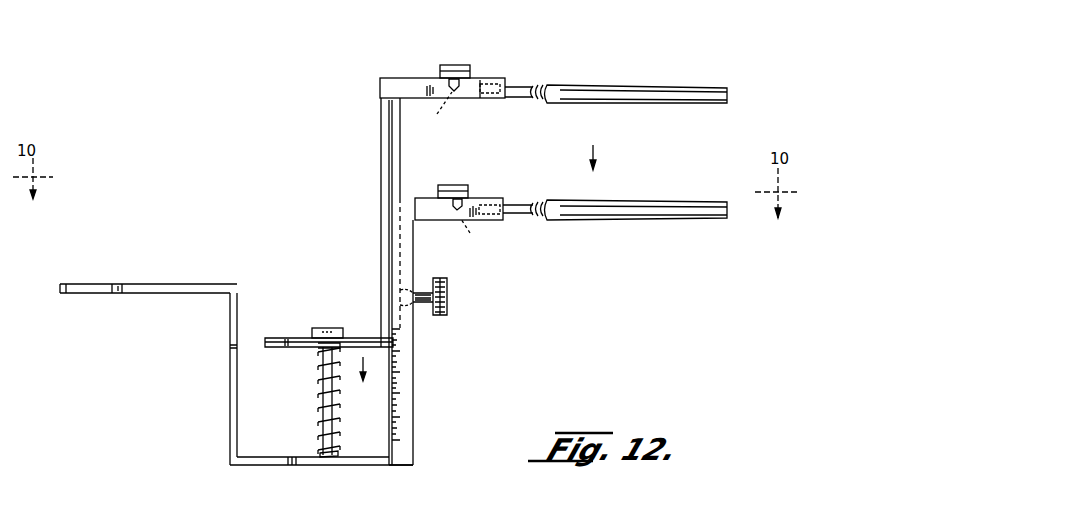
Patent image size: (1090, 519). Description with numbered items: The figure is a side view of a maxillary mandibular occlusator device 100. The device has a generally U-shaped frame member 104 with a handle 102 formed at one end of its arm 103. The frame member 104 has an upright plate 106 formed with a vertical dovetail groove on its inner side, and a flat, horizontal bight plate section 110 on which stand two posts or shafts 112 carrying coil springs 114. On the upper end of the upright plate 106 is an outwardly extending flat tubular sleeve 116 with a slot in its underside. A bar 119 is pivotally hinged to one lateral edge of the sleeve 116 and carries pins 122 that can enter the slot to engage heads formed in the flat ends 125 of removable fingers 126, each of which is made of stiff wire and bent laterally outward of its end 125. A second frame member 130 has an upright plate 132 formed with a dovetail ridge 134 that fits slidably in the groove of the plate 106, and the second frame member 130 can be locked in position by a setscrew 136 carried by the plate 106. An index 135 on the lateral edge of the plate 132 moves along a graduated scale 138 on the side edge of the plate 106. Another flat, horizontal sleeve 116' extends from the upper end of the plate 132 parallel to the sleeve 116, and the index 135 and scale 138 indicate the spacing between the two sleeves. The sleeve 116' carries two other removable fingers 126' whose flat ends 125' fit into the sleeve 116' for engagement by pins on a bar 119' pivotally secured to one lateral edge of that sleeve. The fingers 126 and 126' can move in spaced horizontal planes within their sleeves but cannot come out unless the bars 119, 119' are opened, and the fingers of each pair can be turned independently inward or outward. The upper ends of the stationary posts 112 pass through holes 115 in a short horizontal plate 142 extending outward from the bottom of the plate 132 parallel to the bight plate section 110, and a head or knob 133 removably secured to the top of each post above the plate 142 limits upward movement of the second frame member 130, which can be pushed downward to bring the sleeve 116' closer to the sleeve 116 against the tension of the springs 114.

The occlusator device 100 is at (505, 354).
The handle 102 is at (152, 291).
The arm 103 is at (229, 381).
The frame member 104 is at (262, 468).
The upright plate 106 is at (407, 237).
The bight plate section 110 is at (297, 467).
The posts or shafts 112 is at (344, 447).
The coil springs 114 is at (318, 427).
The holes 115 is at (320, 345).
The sleeve 116 is at (481, 228).
The sleeve 116' is at (470, 106).
The bar 119 is at (477, 180).
The bar 119' is at (480, 63).
The pins 122 is at (454, 164).
The flat ends 125 is at (534, 221).
The flat ends 125' is at (523, 111).
The removable fingers 126 is at (636, 199).
The removable fingers 126' is at (636, 108).
The second frame member 130 is at (420, 76).
The upright plate 132 is at (384, 176).
The head or knob 133 is at (322, 327).
The dovetail ridge 134 is at (397, 152).
The index 135 is at (383, 327).
The setscrew 136 is at (448, 303).
The graduated scale 138 is at (400, 412).
The short horizontal plate 142 is at (293, 336).